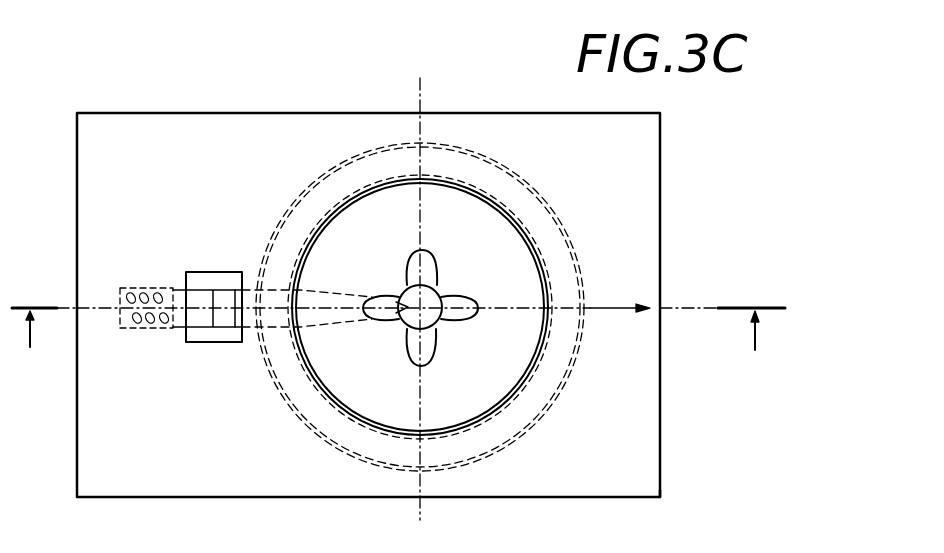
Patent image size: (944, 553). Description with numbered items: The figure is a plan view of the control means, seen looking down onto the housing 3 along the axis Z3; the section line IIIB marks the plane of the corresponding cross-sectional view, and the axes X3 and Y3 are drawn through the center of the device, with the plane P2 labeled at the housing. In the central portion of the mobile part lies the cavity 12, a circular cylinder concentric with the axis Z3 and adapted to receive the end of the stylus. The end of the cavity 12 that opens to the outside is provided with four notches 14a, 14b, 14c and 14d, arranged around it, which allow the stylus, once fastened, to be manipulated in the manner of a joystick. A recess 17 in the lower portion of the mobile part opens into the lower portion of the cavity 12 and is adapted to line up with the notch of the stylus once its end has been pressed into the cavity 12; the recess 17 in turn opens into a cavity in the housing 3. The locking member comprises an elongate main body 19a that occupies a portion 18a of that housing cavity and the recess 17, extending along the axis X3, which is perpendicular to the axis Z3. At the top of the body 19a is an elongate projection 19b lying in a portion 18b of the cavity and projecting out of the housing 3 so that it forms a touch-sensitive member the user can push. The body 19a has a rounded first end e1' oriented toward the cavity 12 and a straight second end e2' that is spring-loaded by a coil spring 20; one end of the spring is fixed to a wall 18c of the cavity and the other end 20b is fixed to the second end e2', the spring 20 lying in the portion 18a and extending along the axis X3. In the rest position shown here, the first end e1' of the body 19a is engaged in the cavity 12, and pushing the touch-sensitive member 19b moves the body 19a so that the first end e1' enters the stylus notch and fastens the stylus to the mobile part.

The housing 3 is at (648, 210).
The cavity 12 is at (405, 288).
The notch 14a is at (427, 267).
The notch 14b is at (425, 350).
The notch 14c is at (395, 323).
The notch 14d is at (458, 315).
The recess 17 is at (320, 328).
The portion of the cavity 18a is at (132, 327).
The portion of the cavity 18b is at (207, 300).
The wall of the cavity 18c is at (120, 307).
The elongate main body 19a is at (180, 300).
The elongate projection 19b is at (227, 296).
The coil spring 20 is at (153, 320).
The end of the spring 20b is at (168, 320).
The plane P2 is at (662, 477).
The axis X3 is at (363, 291).
The Y axis Y3 is at (421, 279).
The axis Z3 is at (422, 306).
The first end e1' is at (345, 269).
The second end e2' is at (145, 241).
The section line IIIB is at (398, 348).